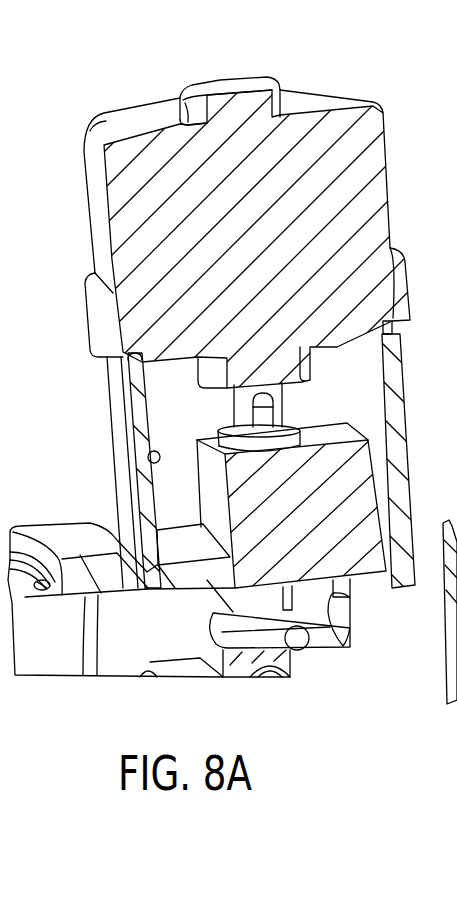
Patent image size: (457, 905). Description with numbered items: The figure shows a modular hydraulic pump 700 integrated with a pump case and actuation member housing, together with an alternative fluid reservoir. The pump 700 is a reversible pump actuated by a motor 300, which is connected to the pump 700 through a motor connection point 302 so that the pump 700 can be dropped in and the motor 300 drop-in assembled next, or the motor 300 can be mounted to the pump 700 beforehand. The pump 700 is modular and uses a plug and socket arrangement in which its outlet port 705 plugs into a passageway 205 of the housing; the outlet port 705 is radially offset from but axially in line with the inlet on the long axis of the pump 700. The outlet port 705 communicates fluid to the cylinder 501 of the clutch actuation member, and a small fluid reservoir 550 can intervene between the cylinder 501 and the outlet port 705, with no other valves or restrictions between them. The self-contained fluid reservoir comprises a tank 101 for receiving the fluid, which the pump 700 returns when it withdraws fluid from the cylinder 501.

The motor 300 is at (315, 92).
The motor connection point 302 is at (303, 403).
The pump 700 is at (205, 458).
The tank 101 is at (148, 460).
The cylinder 501 is at (57, 608).
The small fluid reservoir 550 is at (183, 597).
The passageway 205 is at (303, 649).
The outlet port 705 is at (347, 647).